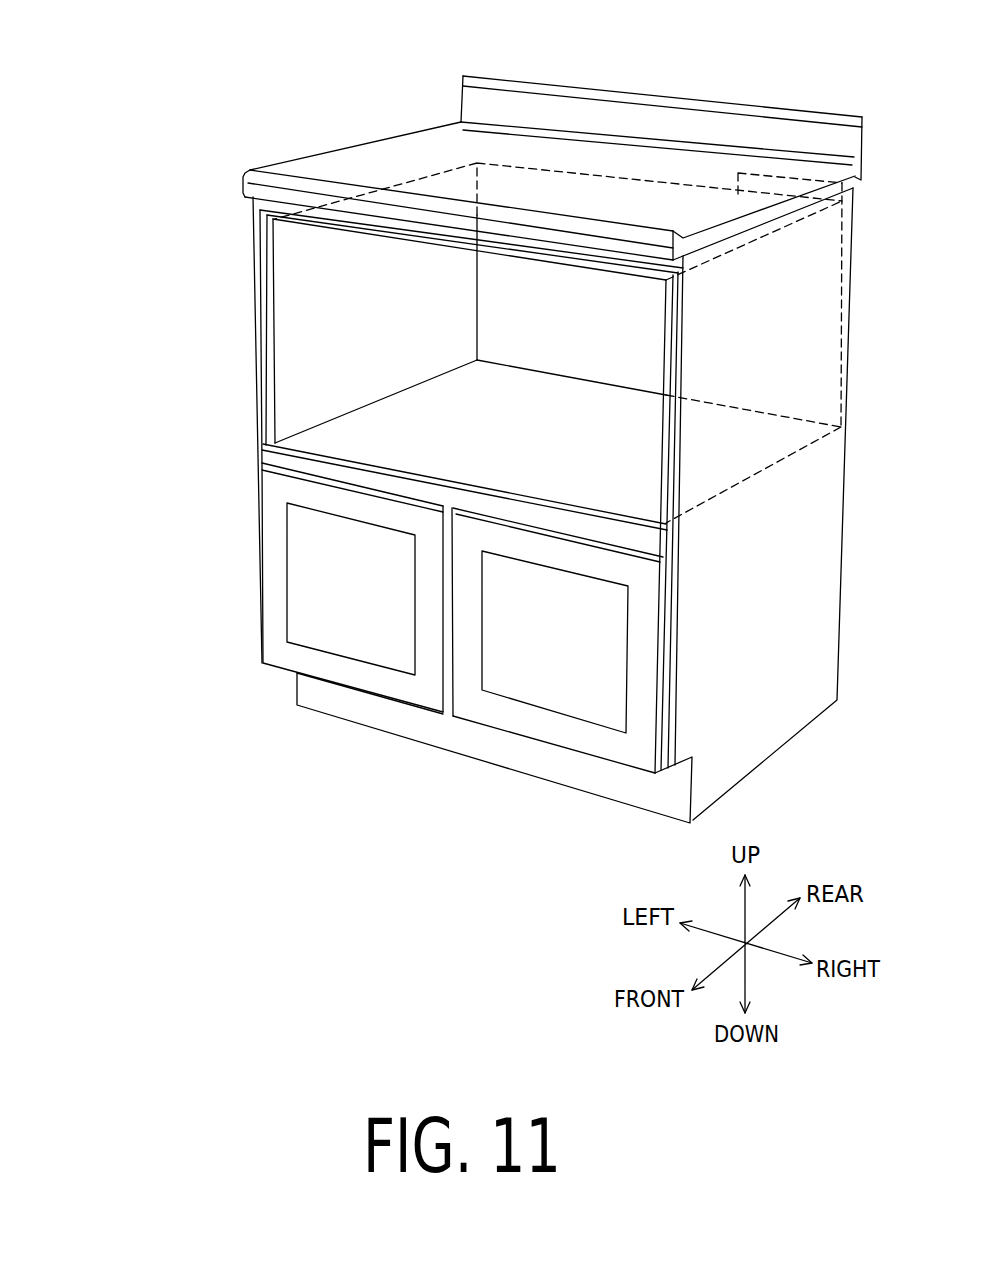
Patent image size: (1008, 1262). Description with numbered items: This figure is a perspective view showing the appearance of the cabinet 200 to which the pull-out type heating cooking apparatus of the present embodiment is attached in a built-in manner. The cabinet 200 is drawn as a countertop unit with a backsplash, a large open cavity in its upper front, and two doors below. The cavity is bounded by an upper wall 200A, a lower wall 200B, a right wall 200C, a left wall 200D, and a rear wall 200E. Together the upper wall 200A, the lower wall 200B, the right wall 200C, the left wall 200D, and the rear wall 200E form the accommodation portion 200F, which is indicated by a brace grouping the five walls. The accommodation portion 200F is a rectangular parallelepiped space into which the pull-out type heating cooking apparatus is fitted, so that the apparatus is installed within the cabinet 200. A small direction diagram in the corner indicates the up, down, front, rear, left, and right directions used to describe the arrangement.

The cabinet 200 is at (272, 88).
The upper wall 200A is at (493, 197).
The lower wall 200B is at (338, 436).
The right wall 200C is at (710, 349).
The left wall 200D is at (290, 292).
The rear wall 200E is at (523, 298).
The accommodation portion 200F is at (127, 240).